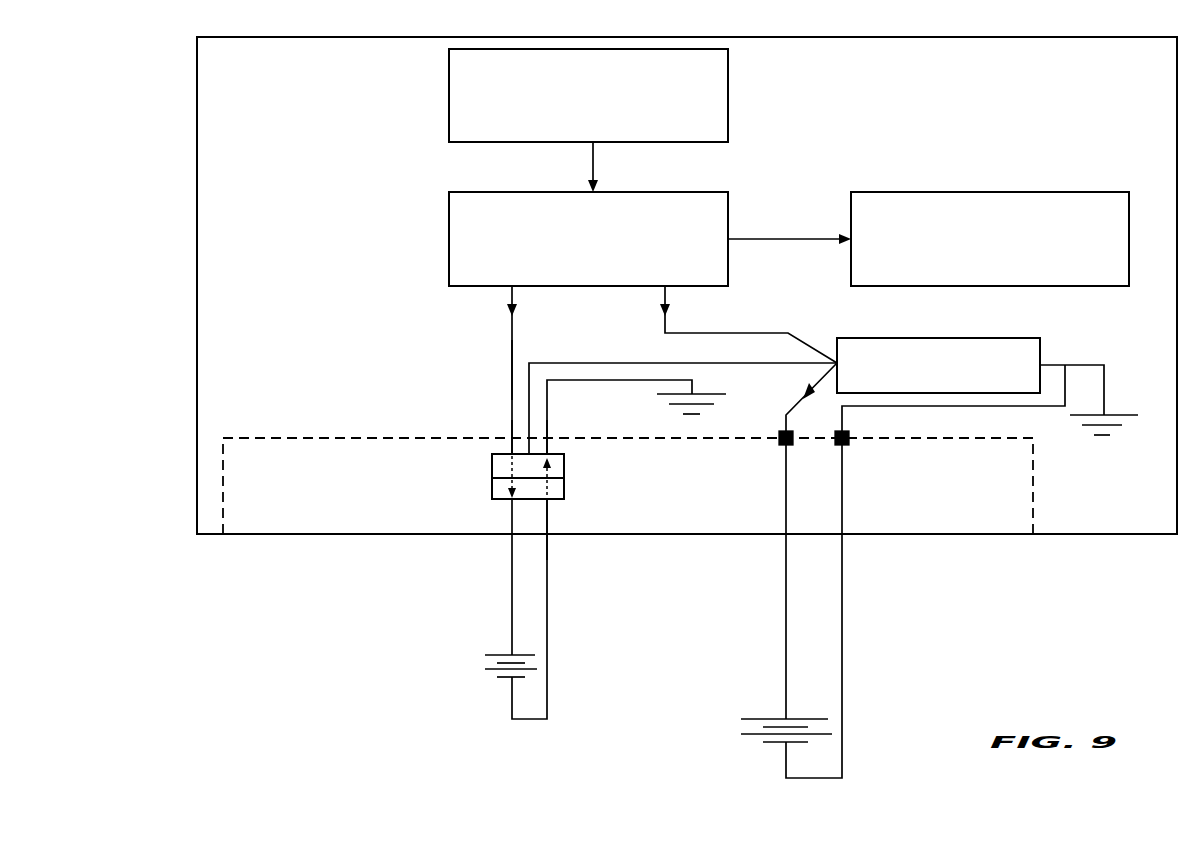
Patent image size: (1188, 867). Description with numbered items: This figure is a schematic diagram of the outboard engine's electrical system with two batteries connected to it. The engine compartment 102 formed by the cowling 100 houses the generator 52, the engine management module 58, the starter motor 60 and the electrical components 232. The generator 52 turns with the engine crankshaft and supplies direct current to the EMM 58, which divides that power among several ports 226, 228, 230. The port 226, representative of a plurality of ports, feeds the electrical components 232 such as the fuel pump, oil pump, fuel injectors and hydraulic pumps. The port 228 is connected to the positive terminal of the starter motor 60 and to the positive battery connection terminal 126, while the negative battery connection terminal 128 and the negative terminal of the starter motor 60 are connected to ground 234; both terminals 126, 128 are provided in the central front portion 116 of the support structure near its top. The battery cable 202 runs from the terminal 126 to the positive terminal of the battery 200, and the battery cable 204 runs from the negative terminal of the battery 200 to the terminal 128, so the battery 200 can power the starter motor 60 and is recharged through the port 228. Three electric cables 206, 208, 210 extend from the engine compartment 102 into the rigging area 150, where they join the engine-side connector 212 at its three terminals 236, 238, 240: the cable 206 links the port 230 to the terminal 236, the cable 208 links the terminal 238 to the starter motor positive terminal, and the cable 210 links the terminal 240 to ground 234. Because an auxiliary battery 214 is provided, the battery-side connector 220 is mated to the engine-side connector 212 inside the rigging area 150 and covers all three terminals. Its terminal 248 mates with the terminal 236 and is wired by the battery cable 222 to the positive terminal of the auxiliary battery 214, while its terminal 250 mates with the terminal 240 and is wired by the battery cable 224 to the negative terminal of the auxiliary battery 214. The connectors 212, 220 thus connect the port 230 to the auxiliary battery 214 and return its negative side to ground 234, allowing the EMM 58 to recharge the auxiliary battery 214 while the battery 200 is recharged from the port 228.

The cowling 100 is at (197, 448).
The engine compartment 102 is at (279, 243).
The central front portion 116 is at (347, 438).
The rigging area 150 is at (357, 480).
The generator 52 is at (728, 92).
The engine management module 58 is at (449, 239).
The starter motor 60 is at (935, 338).
The port 226 is at (731, 236).
The port 228 is at (668, 288).
The port 230 is at (510, 292).
The electrical components 232 is at (1005, 192).
The ground 234 is at (710, 404).
The electric cable 206 is at (510, 364).
The electric cable 208 is at (580, 363).
The electric cable 210 is at (613, 383).
The engine-side connector 212 is at (564, 470).
The battery-side connector 220 is at (564, 490).
The engine-side connector terminal 236 is at (507, 454).
The engine-side connector terminal 238 is at (528, 454).
The engine-side connector terminal 240 is at (548, 454).
The battery-side connector terminal 248 is at (510, 505).
The battery-side connector terminal 250 is at (550, 502).
The battery cable 222 is at (510, 594).
The battery cable 224 is at (549, 592).
The auxiliary battery 214 is at (472, 666).
The positive battery connection terminal 126 is at (782, 446).
The negative battery connection terminal 128 is at (848, 446).
The battery cable 202 is at (784, 628).
The battery cable 204 is at (844, 628).
The battery 200 is at (710, 728).